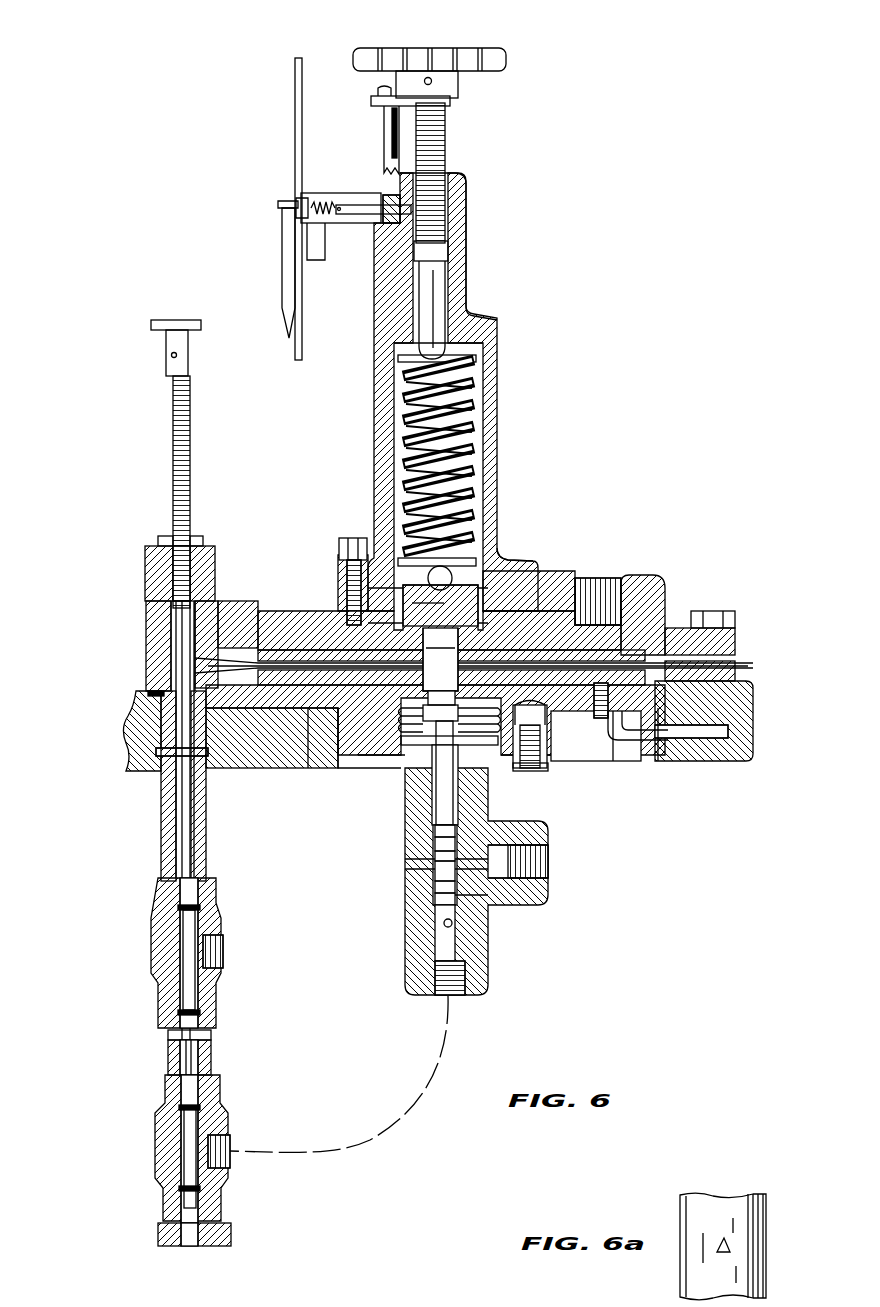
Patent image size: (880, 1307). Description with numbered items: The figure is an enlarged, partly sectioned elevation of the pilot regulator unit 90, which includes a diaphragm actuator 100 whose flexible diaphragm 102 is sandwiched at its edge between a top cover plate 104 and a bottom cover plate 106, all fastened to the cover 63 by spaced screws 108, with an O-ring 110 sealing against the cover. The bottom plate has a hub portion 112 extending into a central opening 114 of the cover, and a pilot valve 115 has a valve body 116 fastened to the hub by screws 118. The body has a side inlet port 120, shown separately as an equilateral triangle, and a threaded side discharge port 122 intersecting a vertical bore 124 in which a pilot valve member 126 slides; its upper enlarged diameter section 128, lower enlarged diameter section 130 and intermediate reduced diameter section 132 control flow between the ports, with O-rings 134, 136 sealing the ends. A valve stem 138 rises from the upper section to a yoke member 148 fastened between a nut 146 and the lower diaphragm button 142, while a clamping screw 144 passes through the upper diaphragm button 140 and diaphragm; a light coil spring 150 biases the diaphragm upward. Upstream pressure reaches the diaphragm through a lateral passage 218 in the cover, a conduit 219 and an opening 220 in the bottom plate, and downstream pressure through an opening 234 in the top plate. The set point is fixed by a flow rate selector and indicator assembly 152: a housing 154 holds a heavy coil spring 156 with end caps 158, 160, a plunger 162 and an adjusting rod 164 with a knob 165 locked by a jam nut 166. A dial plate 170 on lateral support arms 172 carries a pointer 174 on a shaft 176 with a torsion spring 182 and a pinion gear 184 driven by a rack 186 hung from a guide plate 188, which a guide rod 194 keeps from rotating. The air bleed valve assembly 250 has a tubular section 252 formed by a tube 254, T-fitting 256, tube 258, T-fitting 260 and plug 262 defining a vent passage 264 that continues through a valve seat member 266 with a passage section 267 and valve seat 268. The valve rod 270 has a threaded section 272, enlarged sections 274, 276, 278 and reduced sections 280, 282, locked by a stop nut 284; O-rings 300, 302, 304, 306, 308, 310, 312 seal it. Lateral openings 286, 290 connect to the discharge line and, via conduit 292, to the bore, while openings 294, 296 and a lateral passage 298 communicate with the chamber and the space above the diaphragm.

In FIG. 6, the knob 165 is at (455, 46).
In FIG. 6, the dial plate 170 is at (287, 82).
In FIG. 6, the guide plate 188 is at (444, 94).
In FIG. 6, the rack 186 is at (376, 106).
In FIG. 6, the guide rod 194 is at (384, 118).
In FIG. 6, the adjusting rod 164 is at (440, 131).
In FIG. 6, the jam nut 166 is at (460, 172).
In FIG. 6, the lateral support arms 172 is at (330, 185).
In FIG. 6, the pinion gear 184 is at (378, 188).
In FIG. 6, the shaft 176 is at (352, 207).
In FIG. 6, the pointer 174 is at (276, 272).
In FIG. 6, the torsion spring 182 is at (310, 240).
In FIG. 6, the plunger 162 is at (432, 297).
In FIG. 6, the end cap 160 is at (489, 330).
In FIG. 6, the flow rate selector and indicator assembly 152 is at (347, 375).
In FIG. 6, the housing 154 is at (373, 433).
In FIG. 6, the heavy coil spring 156 is at (462, 420).
In FIG. 6, the pilot regulator unit 90 is at (565, 440).
In FIG. 6, the end cap 158 is at (470, 548).
In FIG. 6, the valve rod 270 is at (161, 414).
In FIG. 6, the upper threaded section 272 is at (182, 477).
In FIG. 6, the stop nut 284 is at (155, 530).
In FIG. 6, the upper reduced diameter passage section 267 is at (200, 540).
In FIG. 6, the valve seat member 266 is at (208, 560).
In FIG. 6, the air bleed valve assembly 250 is at (118, 576).
In FIG. 6, the lateral passage 298 is at (222, 630).
In FIG. 6, the top cover plate 104 is at (322, 598).
In FIG. 6, the valve seat 268 is at (150, 620).
In FIG. 6, the O-ring 300 is at (164, 637).
In FIG. 6, the O-ring 302 is at (160, 655).
In FIG. 6, the enlarged diameter section 274 is at (175, 670).
In FIG. 6, the O-ring 304 is at (140, 686).
In FIG. 6, the lateral opening 294 is at (180, 742).
In FIG. 6, the tube 254 is at (156, 782).
In FIG. 6, the reduced diameter section 280 is at (174, 802).
In FIG. 6, the vent passage 264 is at (174, 818).
In FIG. 6, the tubular section 252 is at (140, 861).
In FIG. 6, the O-ring 306 is at (170, 900).
In FIG. 6, the enlarged diameter section 276 is at (175, 920).
In FIG. 6, the T-fitting 256 is at (145, 938).
In FIG. 6, the lateral opening 286 is at (216, 942).
In FIG. 6, the O-ring 308 is at (170, 983).
In FIG. 6, the lateral opening 296 is at (160, 1027).
In FIG. 6, the tube 258 is at (162, 1052).
In FIG. 6, the reduced diameter section 282 is at (195, 1053).
In FIG. 6, the O-ring 310 is at (171, 1099).
In FIG. 6, the enlarged diameter section 278 is at (180, 1120).
In FIG. 6, the T-fitting 260 is at (147, 1148).
In FIG. 6, the lateral opening 290 is at (224, 1148).
In FIG. 6, the O-ring 312 is at (205, 1181).
In FIG. 6, the plug 262 is at (150, 1225).
In FIG. 6, the conduit 292 is at (366, 1130).
In FIG. 6, the opening 234 is at (598, 570).
In FIG. 6, the diaphragm actuator 100 is at (643, 566).
In FIG. 6, the clamping screw 144 is at (432, 585).
In FIG. 6, the diaphragm button 140 is at (428, 605).
In FIG. 6, the screws 108 is at (710, 602).
In FIG. 6, the flexible diaphragm 102 is at (640, 640).
In FIG. 6, the opening 220 is at (588, 678).
In FIG. 6, the light coil spring 150 is at (596, 736).
In FIG. 6, the bottom cover plate 106 is at (618, 724).
In FIG. 6, the central opening 114 is at (536, 748).
In FIG. 6, the screws 118 is at (525, 772).
In FIG. 6, the conduit 219 is at (610, 742).
In FIG. 6, the O-ring 110 is at (655, 742).
In FIG. 6, the cover 63 is at (705, 748).
In FIG. 6, the lateral passage 218 is at (743, 748).
In FIG. 6, the diaphragm button 142 is at (300, 728).
In FIG. 6, the hub portion 112 is at (315, 732).
In FIG. 6, the nut 146 is at (378, 742).
In FIG. 6, the yoke member 148 is at (386, 777).
In FIG. 6, the pilot valve 115 is at (380, 794).
In FIG. 6, the valve body 116 is at (400, 811).
In FIG. 6a, the valve body 116 is at (725, 1190).
In FIG. 6, the valve stem 138 is at (445, 799).
In FIG. 6, the O-ring 134 is at (450, 830).
In FIG. 6, the upper enlarged diameter section 128 is at (426, 828).
In FIG. 6, the intermediate reduced diameter section 132 is at (428, 846).
In FIG. 6, the side inlet port 120 is at (412, 862).
In FIG. 6a, the side inlet port 120 is at (722, 1240).
In FIG. 6, the lower enlarged diameter section 130 is at (430, 876).
In FIG. 6, the O-ring 136 is at (430, 896).
In FIG. 6, the side discharge port 122 is at (532, 872).
In FIG. 6, the pilot valve member 126 is at (452, 898).
In FIG. 6, the vertical bore 124 is at (450, 936).